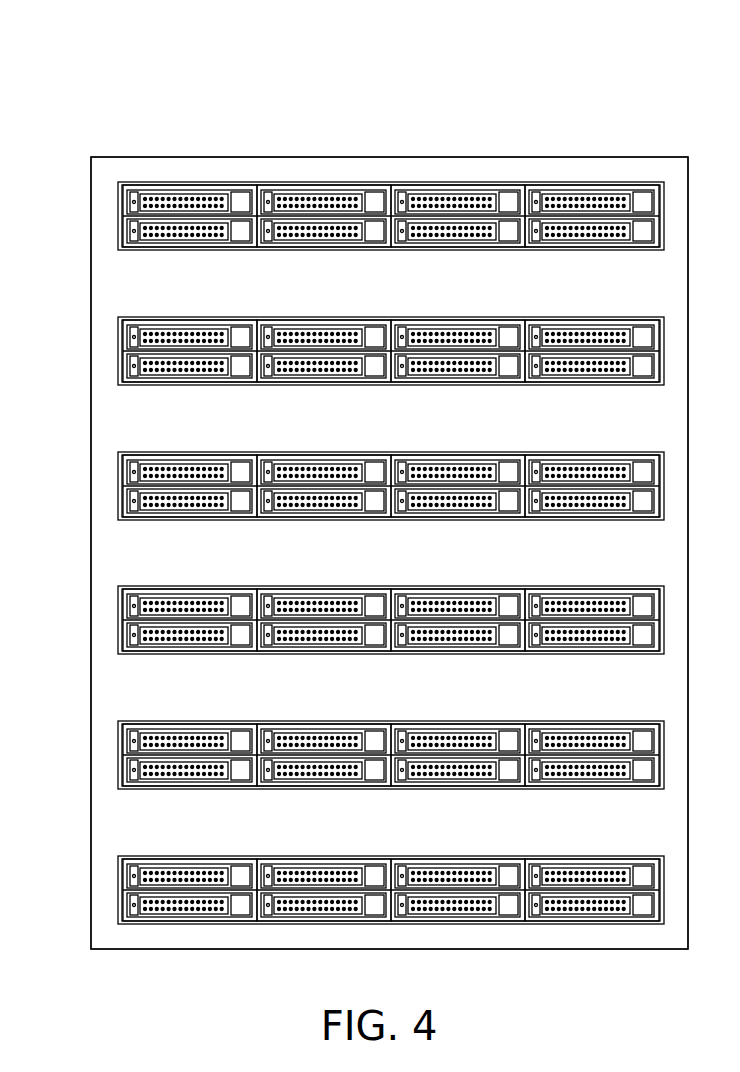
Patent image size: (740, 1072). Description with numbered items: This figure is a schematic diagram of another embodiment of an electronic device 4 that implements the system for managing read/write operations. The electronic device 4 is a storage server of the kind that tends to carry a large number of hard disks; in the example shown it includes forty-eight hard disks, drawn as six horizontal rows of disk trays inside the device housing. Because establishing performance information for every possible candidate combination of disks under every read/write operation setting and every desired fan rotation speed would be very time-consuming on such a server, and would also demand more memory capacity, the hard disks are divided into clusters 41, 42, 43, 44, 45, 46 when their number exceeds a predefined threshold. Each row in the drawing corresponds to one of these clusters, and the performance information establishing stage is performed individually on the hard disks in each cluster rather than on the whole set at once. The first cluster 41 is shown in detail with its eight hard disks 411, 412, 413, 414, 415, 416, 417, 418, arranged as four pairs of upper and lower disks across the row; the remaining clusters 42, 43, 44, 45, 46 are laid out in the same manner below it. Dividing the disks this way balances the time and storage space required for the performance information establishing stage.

The electronic device 4 is at (512, 116).
The cluster 41 is at (341, 197).
The cluster 42 is at (121, 350).
The cluster 43 is at (121, 485).
The cluster 44 is at (121, 619).
The cluster 45 is at (121, 754).
The cluster 46 is at (121, 889).
The hard disk 411 is at (181, 196).
The hard disk 412 is at (178, 233).
The hard disk 413 is at (316, 196).
The hard disk 414 is at (316, 233).
The hard disk 415 is at (449, 196).
The hard disk 416 is at (447, 233).
The hard disk 417 is at (583, 196).
The hard disk 418 is at (580, 233).